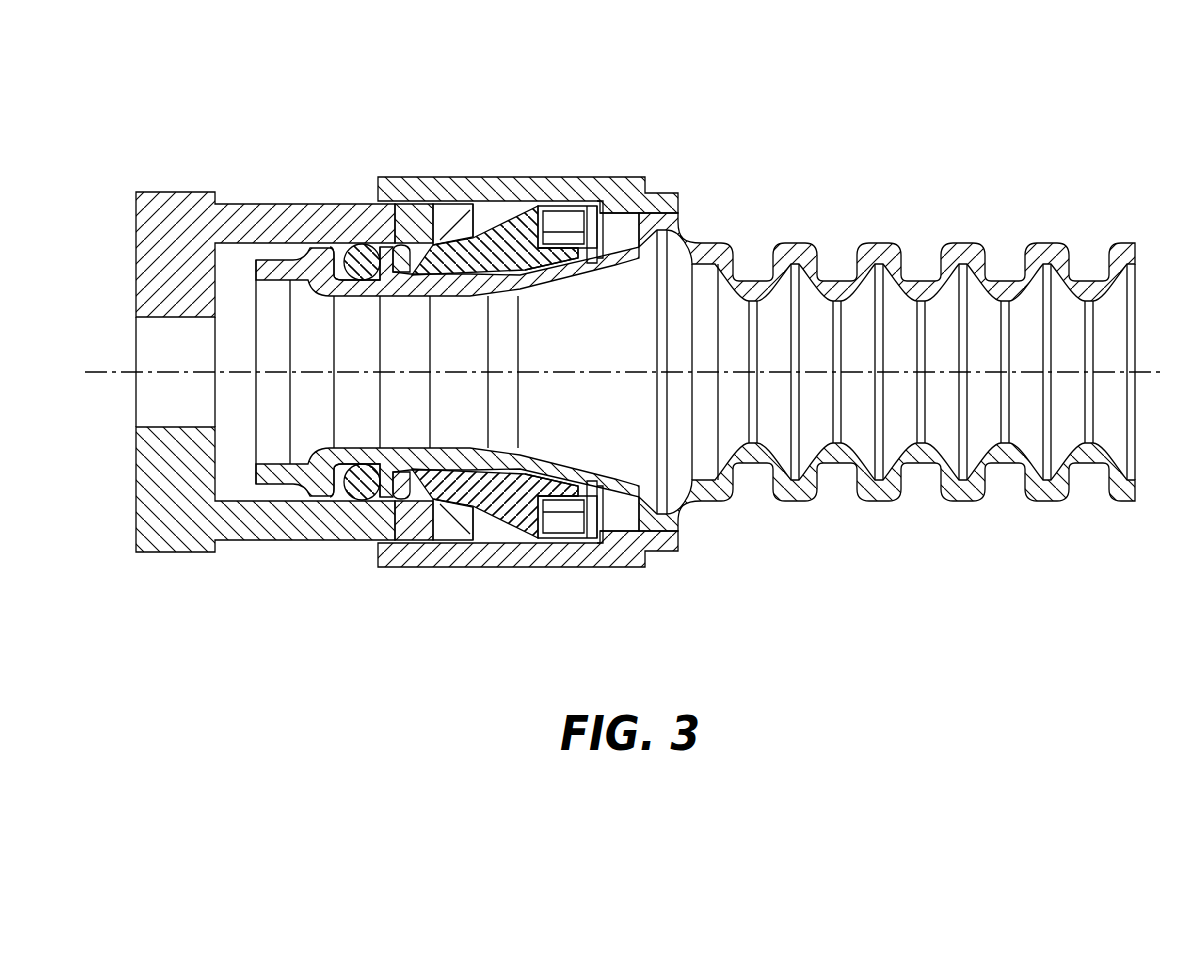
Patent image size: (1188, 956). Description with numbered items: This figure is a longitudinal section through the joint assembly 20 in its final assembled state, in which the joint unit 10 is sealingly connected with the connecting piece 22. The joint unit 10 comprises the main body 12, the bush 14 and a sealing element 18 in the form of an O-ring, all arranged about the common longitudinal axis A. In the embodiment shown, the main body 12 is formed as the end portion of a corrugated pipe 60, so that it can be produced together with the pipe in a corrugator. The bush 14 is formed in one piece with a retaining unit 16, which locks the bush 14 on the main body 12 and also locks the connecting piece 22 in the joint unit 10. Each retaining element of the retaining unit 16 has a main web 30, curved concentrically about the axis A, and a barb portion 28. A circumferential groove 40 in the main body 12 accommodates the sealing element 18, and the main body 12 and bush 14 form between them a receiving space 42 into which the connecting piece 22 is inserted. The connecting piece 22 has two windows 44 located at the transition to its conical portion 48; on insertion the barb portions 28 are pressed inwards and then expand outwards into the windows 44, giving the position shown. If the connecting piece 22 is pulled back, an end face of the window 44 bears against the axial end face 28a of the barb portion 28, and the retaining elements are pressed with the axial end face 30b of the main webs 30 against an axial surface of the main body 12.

The joint unit 10 is at (1092, 112).
The main body 12 is at (690, 532).
The bush 14 is at (472, 570).
The retaining unit 16 is at (494, 299).
The sealing element 18 is at (356, 256).
The joint assembly 20 is at (108, 114).
The connecting piece 22 is at (145, 541).
The barb portion 28 is at (520, 214).
The axial end face of the barb portion 28a is at (549, 222).
The main web 30 is at (434, 244).
The axial end face of the main web 30b is at (416, 259).
The circumferential groove 40 is at (332, 485).
The receiving space 42 is at (619, 248).
The window 44 is at (487, 220).
The conical portion 48 is at (476, 493).
The corrugated pipe 60 is at (984, 505).
The longitudinal axis A is at (1155, 375).